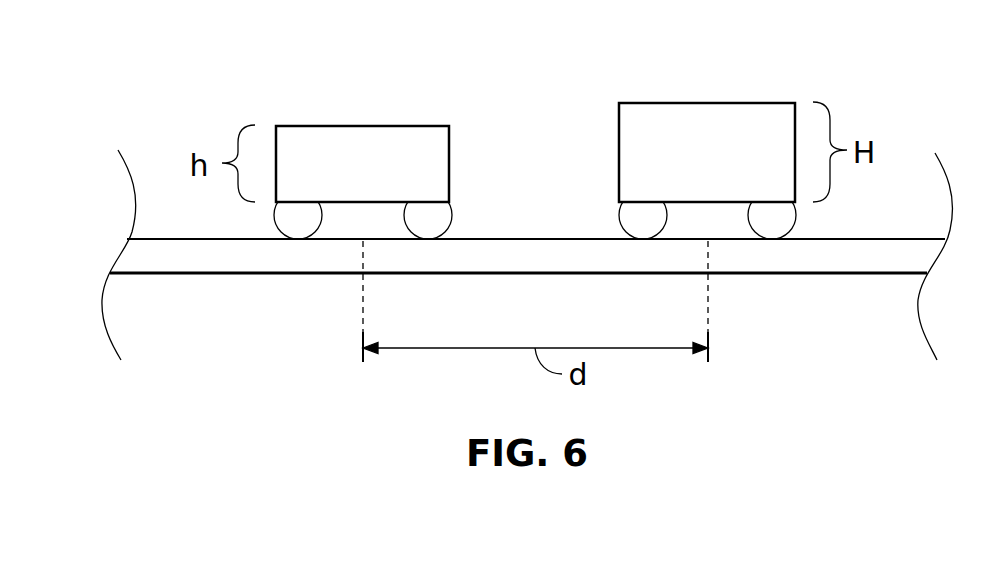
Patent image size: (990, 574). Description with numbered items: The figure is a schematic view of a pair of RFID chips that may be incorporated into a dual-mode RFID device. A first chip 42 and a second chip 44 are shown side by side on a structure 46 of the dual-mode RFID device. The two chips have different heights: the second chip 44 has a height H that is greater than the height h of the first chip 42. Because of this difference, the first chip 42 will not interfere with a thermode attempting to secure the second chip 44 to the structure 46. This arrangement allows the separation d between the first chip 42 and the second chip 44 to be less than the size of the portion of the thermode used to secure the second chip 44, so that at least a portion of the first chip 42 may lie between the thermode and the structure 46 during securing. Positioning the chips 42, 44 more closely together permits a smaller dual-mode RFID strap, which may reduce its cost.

The first chip 42 is at (365, 125).
The second chip 44 is at (708, 102).
The structure 46 is at (885, 238).